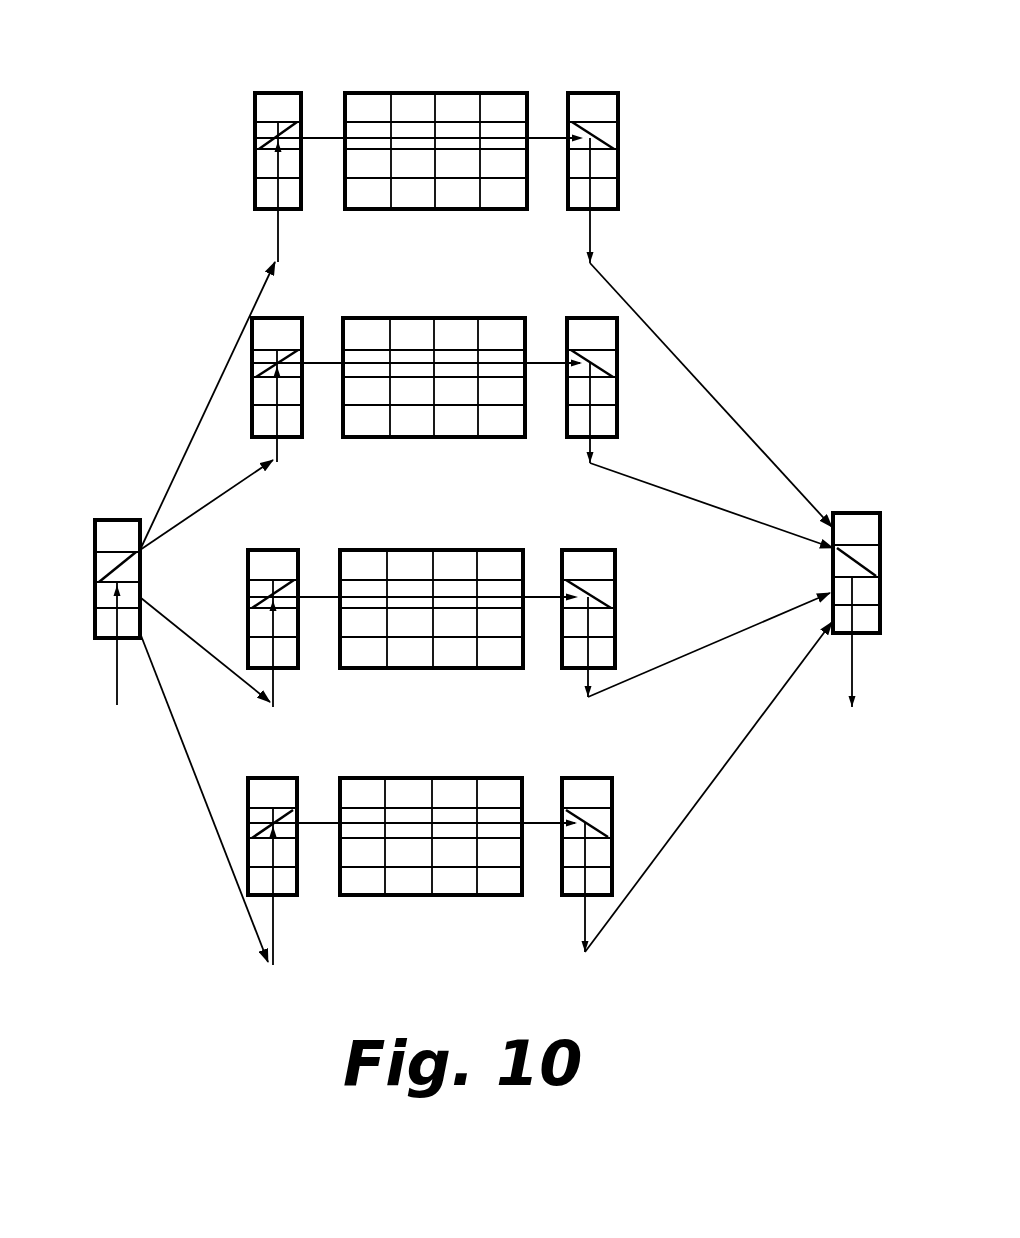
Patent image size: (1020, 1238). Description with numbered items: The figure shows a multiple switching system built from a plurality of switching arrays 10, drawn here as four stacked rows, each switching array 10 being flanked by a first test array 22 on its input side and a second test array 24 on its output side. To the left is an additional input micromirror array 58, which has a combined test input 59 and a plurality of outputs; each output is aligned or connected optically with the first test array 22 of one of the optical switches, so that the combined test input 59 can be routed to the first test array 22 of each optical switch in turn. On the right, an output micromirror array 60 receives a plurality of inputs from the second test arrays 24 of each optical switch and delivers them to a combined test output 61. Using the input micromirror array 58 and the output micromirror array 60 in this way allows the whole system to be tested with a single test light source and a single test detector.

The switching array 10 is at (467, 93).
The first test array 22 is at (253, 138).
The second test array 24 is at (618, 153).
The input micromirror array 58 is at (95, 587).
The combined test input 59 is at (117, 673).
The output micromirror array 60 is at (838, 637).
The combined test output 61 is at (853, 652).